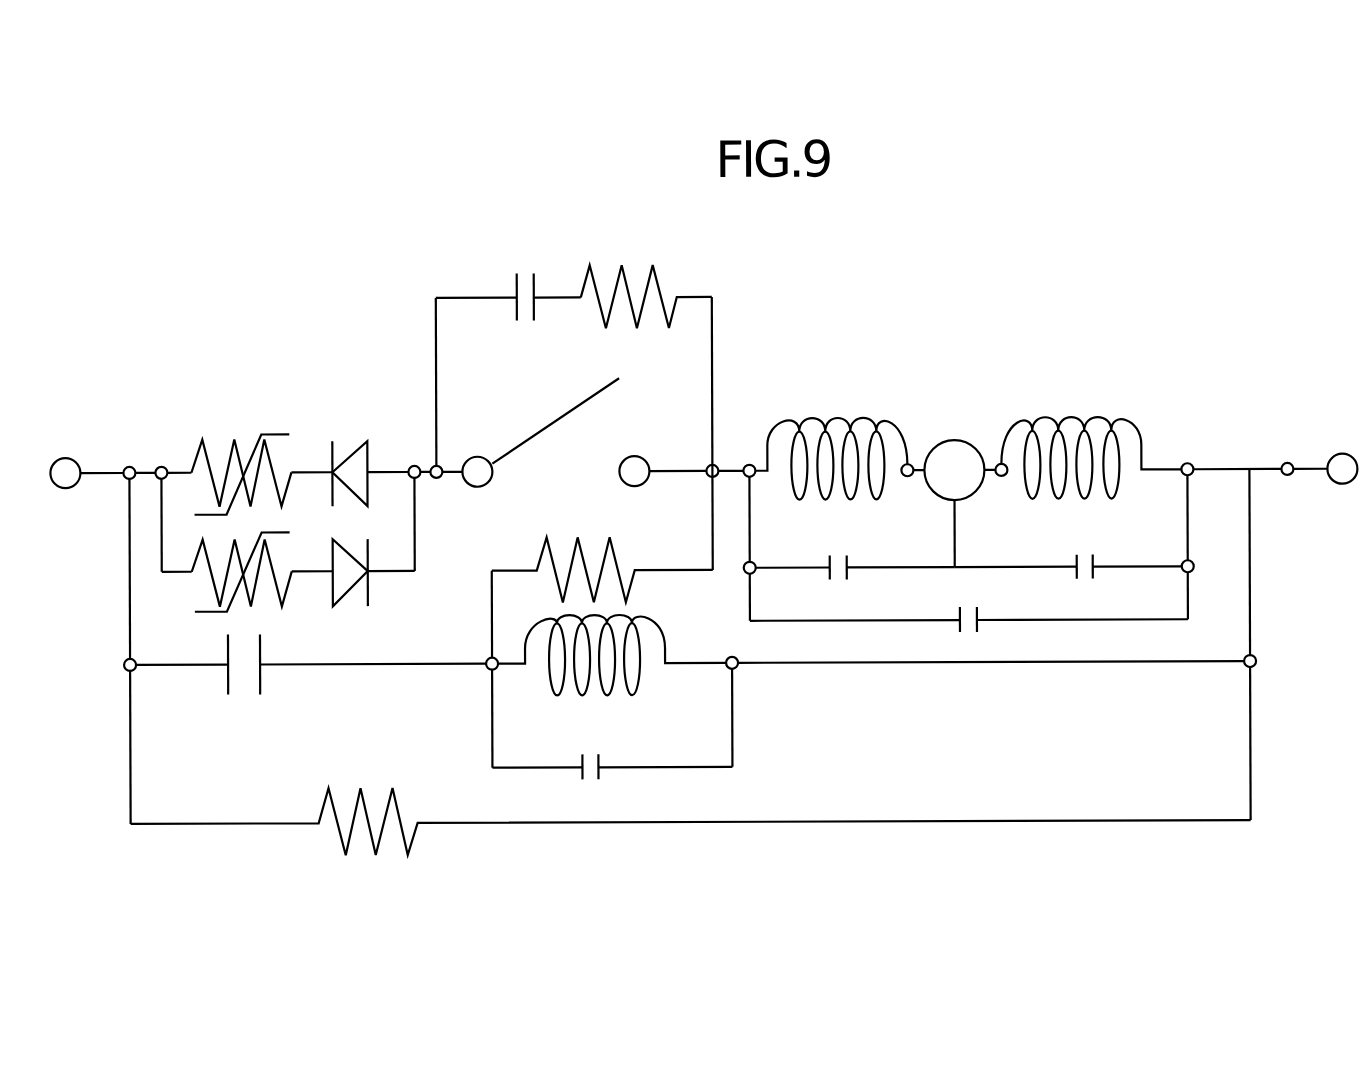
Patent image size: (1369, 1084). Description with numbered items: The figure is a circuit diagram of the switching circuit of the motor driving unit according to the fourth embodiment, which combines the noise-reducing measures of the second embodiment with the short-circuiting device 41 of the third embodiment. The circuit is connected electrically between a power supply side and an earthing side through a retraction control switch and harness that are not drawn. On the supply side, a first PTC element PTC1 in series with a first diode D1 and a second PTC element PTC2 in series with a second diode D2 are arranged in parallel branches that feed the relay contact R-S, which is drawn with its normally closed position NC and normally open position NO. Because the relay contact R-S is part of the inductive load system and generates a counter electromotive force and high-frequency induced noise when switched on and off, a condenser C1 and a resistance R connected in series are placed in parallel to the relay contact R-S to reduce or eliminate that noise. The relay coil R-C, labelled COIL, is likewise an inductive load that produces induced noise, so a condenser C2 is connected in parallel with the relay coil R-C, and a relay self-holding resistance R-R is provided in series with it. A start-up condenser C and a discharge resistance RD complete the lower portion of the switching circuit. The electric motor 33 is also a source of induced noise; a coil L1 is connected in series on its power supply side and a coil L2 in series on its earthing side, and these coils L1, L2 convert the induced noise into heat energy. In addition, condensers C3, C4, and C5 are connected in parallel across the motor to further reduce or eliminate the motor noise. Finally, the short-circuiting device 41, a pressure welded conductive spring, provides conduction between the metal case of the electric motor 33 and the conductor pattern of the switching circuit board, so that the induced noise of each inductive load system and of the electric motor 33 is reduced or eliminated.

The electric motor 33 is at (958, 441).
The short-circuiting device 41 is at (954, 537).
The first PTC element PTC1 is at (254, 458).
The second PTC element PTC2 is at (255, 582).
The first diode D1 is at (349, 454).
The second diode D2 is at (350, 589).
The condenser C1 is at (508, 276).
The resistance R is at (646, 279).
The normally closed contact NC is at (643, 378).
The normally open contact NO is at (662, 453).
The relay contact R-S is at (540, 444).
The relay self-holding resistance R-R is at (602, 565).
The relay coil R-C is at (612, 675).
The coil COIL is at (695, 691).
The condenser C2 is at (612, 778).
The start-up condenser C is at (311, 676).
The discharge resistance RD is at (691, 839).
The coil L1 is at (831, 439).
The coil L2 is at (1091, 438).
The condenser C3 is at (855, 553).
The condenser C4 is at (1068, 552).
The condenser C5 is at (969, 606).